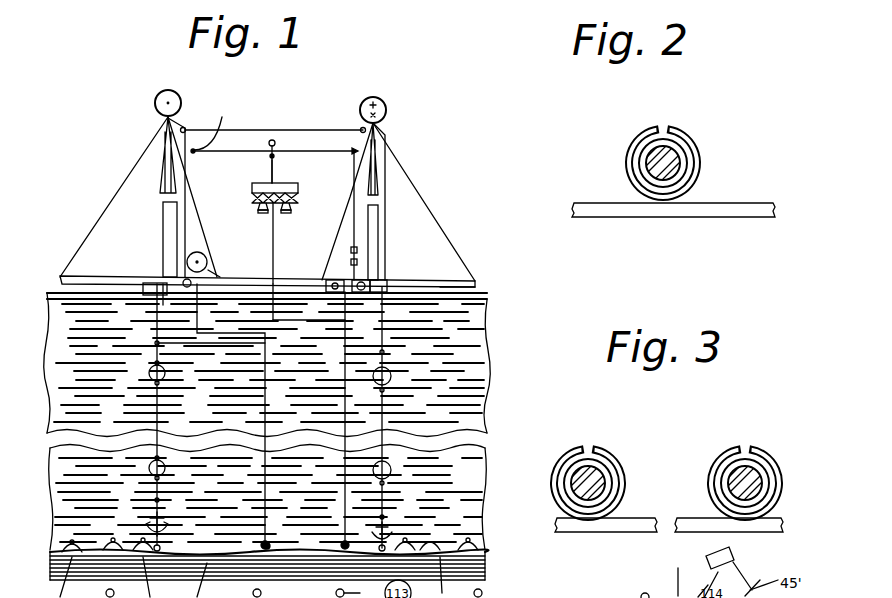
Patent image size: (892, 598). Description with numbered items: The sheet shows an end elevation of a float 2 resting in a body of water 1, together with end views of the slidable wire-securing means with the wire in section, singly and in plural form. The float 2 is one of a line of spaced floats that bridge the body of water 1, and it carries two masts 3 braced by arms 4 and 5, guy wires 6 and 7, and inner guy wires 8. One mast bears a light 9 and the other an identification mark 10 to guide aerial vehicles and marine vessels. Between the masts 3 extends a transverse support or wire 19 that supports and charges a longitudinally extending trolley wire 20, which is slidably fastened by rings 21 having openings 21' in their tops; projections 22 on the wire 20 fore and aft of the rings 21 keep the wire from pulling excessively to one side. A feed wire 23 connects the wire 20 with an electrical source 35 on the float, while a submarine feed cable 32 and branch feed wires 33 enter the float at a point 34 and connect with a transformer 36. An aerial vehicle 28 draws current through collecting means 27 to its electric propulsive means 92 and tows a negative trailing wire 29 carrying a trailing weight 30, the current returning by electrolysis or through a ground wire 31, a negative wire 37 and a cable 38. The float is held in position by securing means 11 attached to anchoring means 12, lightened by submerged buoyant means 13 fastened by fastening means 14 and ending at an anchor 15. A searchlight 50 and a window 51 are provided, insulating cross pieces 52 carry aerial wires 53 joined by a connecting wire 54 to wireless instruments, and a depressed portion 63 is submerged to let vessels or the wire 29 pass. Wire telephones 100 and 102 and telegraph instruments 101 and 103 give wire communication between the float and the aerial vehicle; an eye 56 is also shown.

In FIG. 1, the body of water 1 is at (66, 290).
In FIG. 3, the body of water 1 is at (676, 572).
In FIG. 1, the float 2 is at (151, 270).
In FIG. 1, the mast 3 is at (162, 216).
In FIG. 1, the arm 4 is at (121, 275).
In FIG. 1, the arm 5 is at (387, 281).
In FIG. 1, the guy wire 6 is at (138, 162).
In FIG. 1, the guy wire 7 is at (386, 257).
In FIG. 1, the inner guy wire 8 is at (200, 213).
In FIG. 1, the light 9 is at (155, 103).
In FIG. 1, the identification mark 10 is at (387, 112).
In FIG. 1, the securing means 11 is at (493, 347).
In FIG. 1, the anchoring means 12 is at (161, 485).
In FIG. 1, the submerged buoyant means 13 is at (162, 462).
In FIG. 1, the fastening means 14 is at (147, 483).
In FIG. 1, the anchor 15 is at (165, 528).
In FIG. 1, the transverse support or wire 19 is at (243, 153).
In FIG. 2, the transverse support or wire 19 is at (612, 208).
In FIG. 3, the transverse support or wire 19 is at (687, 528).
In FIG. 1, the longitudinally extending wire 20 is at (275, 172).
In FIG. 2, the longitudinally extending wire 20 is at (642, 166).
In FIG. 3, the longitudinally extending wire 20 is at (575, 480).
In FIG. 2, the slidable securing means 21 is at (693, 164).
In FIG. 3, the slidable securing means 21 is at (666, 480).
In FIG. 2, the opening 21' is at (685, 113).
In FIG. 3, the opening 21' is at (668, 432).
In FIG. 1, the checking means 22 is at (275, 158).
In FIG. 1, the feed wire 23 is at (352, 238).
In FIG. 1, the current collecting means 27 is at (259, 183).
In FIG. 1, the aerial vehicle 28 is at (297, 198).
In FIG. 1, the negative electric trailing wire 29 is at (277, 268).
In FIG. 1, the trailing weight 30 is at (273, 310).
In FIG. 1, the ground or return means 31 is at (150, 268).
In FIG. 1, the submarine feed cable 32 is at (268, 547).
In FIG. 1, the branch feed wire 33 is at (267, 488).
In FIG. 1, the entry point 34 is at (192, 283).
In FIG. 1, the electrical source 35 is at (334, 280).
In FIG. 1, the transformer 36 is at (470, 290).
In FIG. 1, the negative electric current wire 37 is at (318, 447).
In FIG. 1, the cable 38 is at (347, 545).
In FIG. 1, the light 50 is at (205, 262).
In FIG. 1, the window 51 is at (227, 277).
In FIG. 1, the insulating cross piece 52 is at (362, 130).
In FIG. 1, the aerial wire 53 is at (312, 130).
In FIG. 1, the connecting wire 54 is at (187, 235).
In FIG. 1, the hanger eye 56 is at (275, 143).
In FIG. 1, the depressed portion 63 is at (307, 322).
In FIG. 1, the electric propulsive means 92 is at (272, 205).
In FIG. 1, the wire telephone 100 is at (358, 262).
In FIG. 1, the wire telegraph instrument 101 is at (358, 250).
In FIG. 1, the wire telephone 102 is at (252, 196).
In FIG. 1, the wire telegraph instrument 103 is at (293, 208).